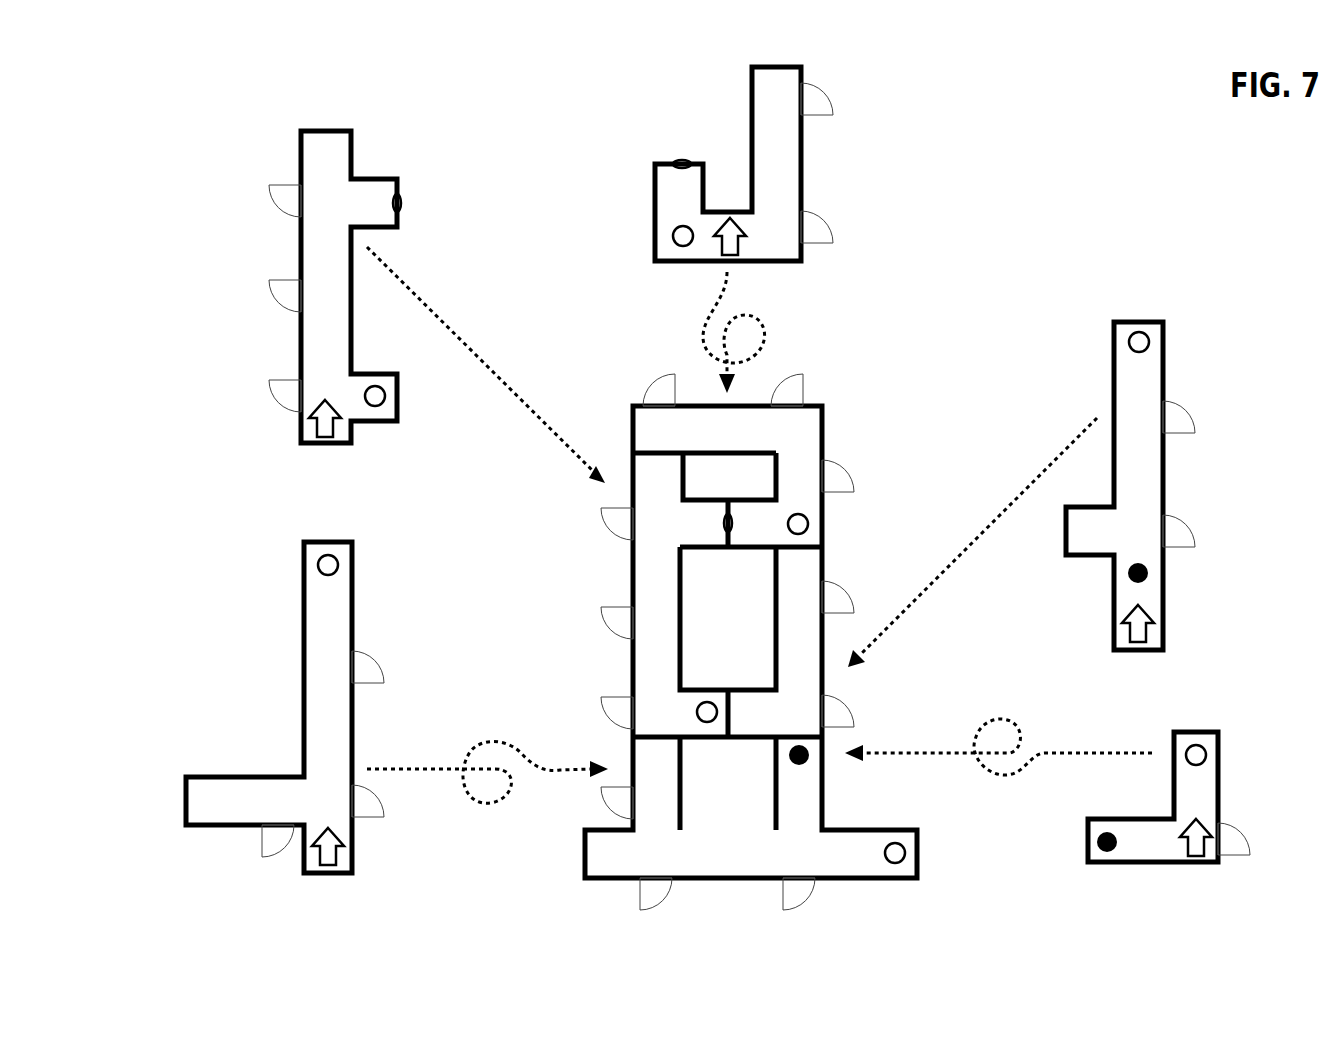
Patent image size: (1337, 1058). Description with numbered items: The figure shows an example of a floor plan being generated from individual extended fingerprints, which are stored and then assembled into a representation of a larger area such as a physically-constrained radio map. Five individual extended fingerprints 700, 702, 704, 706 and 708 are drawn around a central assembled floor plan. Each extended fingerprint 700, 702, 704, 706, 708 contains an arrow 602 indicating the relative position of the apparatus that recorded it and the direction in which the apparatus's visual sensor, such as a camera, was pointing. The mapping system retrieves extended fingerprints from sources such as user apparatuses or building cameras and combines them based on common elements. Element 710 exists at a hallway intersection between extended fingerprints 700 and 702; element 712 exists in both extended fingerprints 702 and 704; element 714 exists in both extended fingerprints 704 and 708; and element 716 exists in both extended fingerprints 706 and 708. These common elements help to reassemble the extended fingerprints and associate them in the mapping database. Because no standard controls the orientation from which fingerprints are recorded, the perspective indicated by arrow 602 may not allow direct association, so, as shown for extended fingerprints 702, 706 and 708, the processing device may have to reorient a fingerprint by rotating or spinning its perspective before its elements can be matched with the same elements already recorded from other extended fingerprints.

The extended fingerprint 700 is at (325, 286).
The extended fingerprint 702 is at (803, 190).
The extended fingerprint 704 is at (1165, 343).
The extended fingerprint 706 is at (302, 658).
The extended fingerprint 708 is at (1225, 808).
The element 710 is at (400, 192).
The element 712 is at (657, 235).
The element 714 is at (1128, 580).
The element 716 is at (338, 563).
The arrow 602 is at (315, 427).